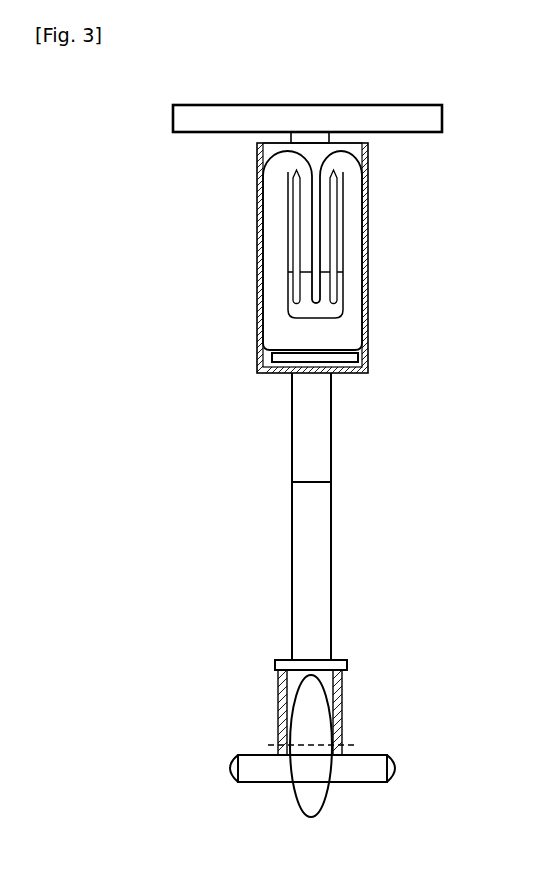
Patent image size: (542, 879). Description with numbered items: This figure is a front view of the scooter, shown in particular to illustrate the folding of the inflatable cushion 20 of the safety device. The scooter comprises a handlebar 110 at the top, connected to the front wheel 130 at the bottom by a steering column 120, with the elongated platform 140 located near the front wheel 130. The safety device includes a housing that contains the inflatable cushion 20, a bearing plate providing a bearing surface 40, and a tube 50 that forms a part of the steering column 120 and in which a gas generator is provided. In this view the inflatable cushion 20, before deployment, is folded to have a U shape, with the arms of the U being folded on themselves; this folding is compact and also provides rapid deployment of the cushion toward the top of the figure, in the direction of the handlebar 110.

The handlebar 110 is at (255, 130).
The inflatable cushion 20 is at (251, 250).
The bearing surface 40 is at (264, 403).
The tube 50 is at (253, 431).
The steering column 120 is at (258, 618).
The front wheel 130 is at (254, 762).
The elongated platform 140 is at (251, 785).